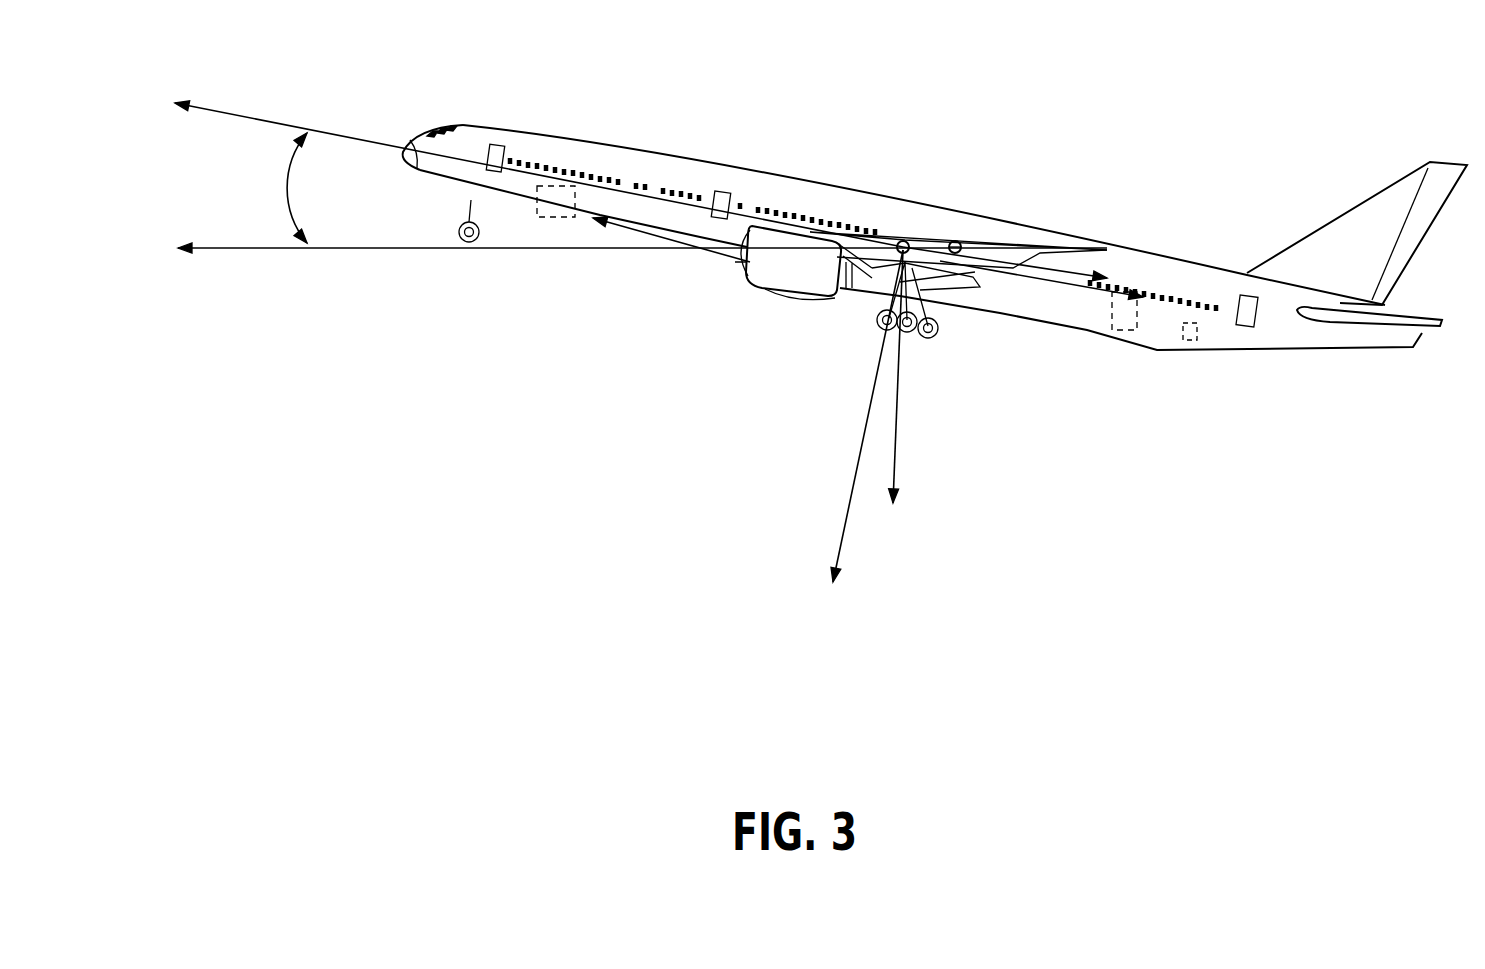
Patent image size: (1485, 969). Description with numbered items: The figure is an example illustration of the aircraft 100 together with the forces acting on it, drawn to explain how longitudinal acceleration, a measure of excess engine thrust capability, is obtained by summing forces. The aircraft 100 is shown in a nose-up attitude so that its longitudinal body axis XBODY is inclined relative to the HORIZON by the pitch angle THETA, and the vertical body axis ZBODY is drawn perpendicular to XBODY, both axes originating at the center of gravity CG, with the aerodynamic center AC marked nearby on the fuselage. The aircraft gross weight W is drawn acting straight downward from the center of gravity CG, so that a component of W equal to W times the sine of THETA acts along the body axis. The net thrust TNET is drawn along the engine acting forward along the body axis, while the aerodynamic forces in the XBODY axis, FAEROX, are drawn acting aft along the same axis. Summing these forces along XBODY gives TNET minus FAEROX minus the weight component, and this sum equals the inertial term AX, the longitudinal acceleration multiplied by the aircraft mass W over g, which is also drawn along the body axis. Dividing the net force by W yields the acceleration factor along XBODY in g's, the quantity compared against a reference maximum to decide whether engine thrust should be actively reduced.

The aircraft 100 is at (608, 92).
The XBODY axis XBODY is at (505, 165).
The horizon HORIZON is at (602, 249).
The pitch angle θ THETA is at (284, 188).
The aircraft gross weight W is at (908, 384).
The ZBODY axis ZBODY is at (856, 433).
The net thrust TNET is at (632, 226).
The aerodynamic forces in the XBODY axis FAEROX is at (1087, 273).
The longitudinal acceleration term ax(W/g) AX is at (1112, 288).
The center of gravity CG is at (903, 241).
The aerodynamic center AC is at (955, 241).